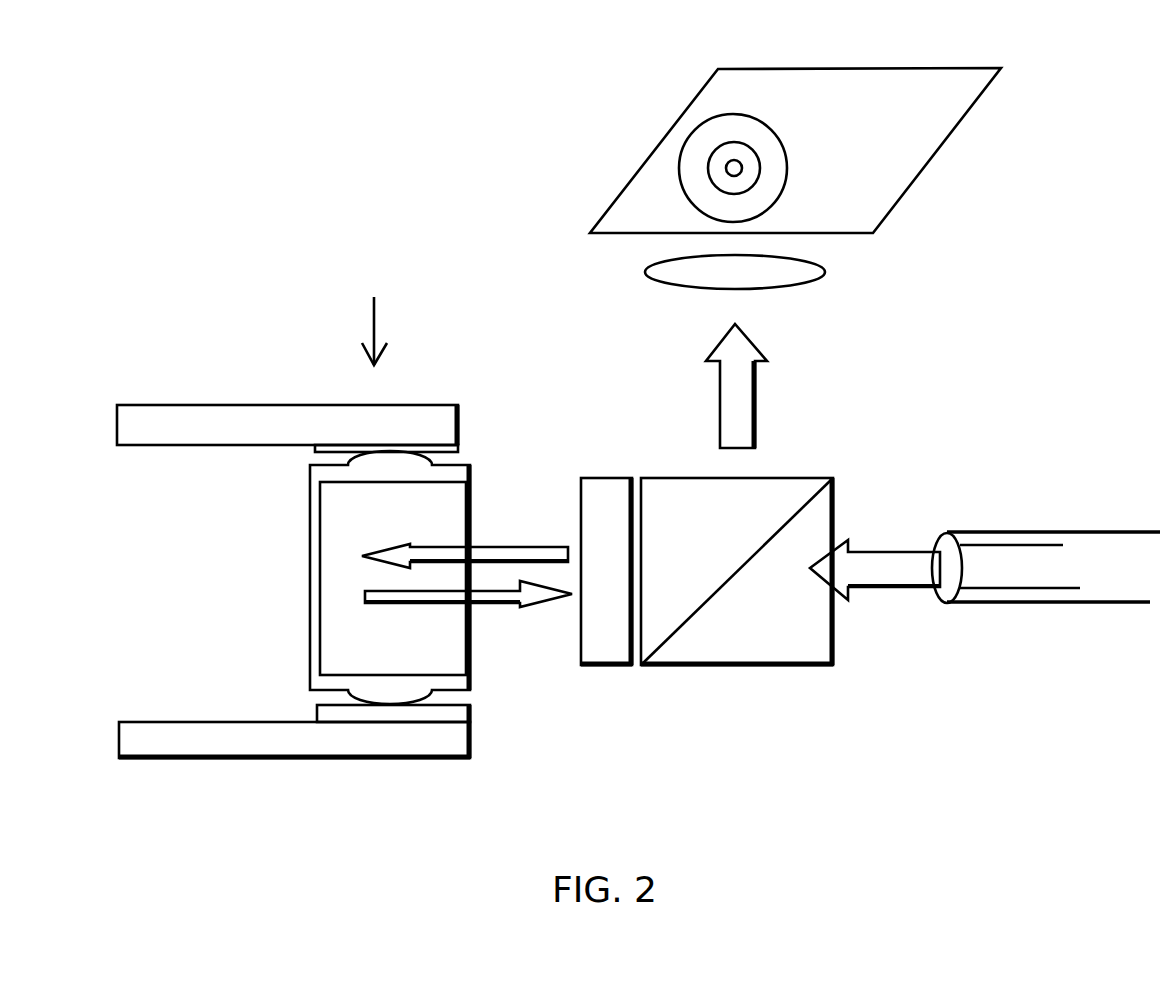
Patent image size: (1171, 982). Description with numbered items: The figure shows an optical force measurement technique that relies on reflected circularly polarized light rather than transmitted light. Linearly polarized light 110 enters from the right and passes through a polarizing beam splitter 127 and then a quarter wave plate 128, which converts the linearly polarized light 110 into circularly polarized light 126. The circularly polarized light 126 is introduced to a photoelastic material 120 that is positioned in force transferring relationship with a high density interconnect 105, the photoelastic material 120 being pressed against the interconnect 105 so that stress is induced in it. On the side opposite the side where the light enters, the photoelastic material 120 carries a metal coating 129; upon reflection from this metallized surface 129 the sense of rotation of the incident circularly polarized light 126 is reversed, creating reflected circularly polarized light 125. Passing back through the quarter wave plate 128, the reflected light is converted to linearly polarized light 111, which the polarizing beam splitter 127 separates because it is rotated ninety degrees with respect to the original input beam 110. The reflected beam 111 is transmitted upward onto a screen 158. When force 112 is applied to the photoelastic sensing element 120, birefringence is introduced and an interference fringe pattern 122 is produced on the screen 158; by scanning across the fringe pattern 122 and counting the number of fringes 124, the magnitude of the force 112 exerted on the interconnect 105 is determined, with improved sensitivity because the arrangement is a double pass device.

The high density interconnect 105 is at (307, 738).
The linearly polarized light 110 is at (874, 548).
The linearly polarized light 111 is at (758, 393).
The force 112 is at (376, 300).
The photoelastic material 120 is at (343, 520).
The interference fringe pattern 122 is at (794, 195).
The fringes 124 is at (748, 146).
The reflected circularly polarized light 125 is at (497, 607).
The circularly polarized light 126 is at (483, 545).
The polarizing beam splitter 127 is at (819, 668).
The quarter wave plate 128 is at (582, 668).
The metal coating 129 is at (308, 591).
The screen 158 is at (845, 66).